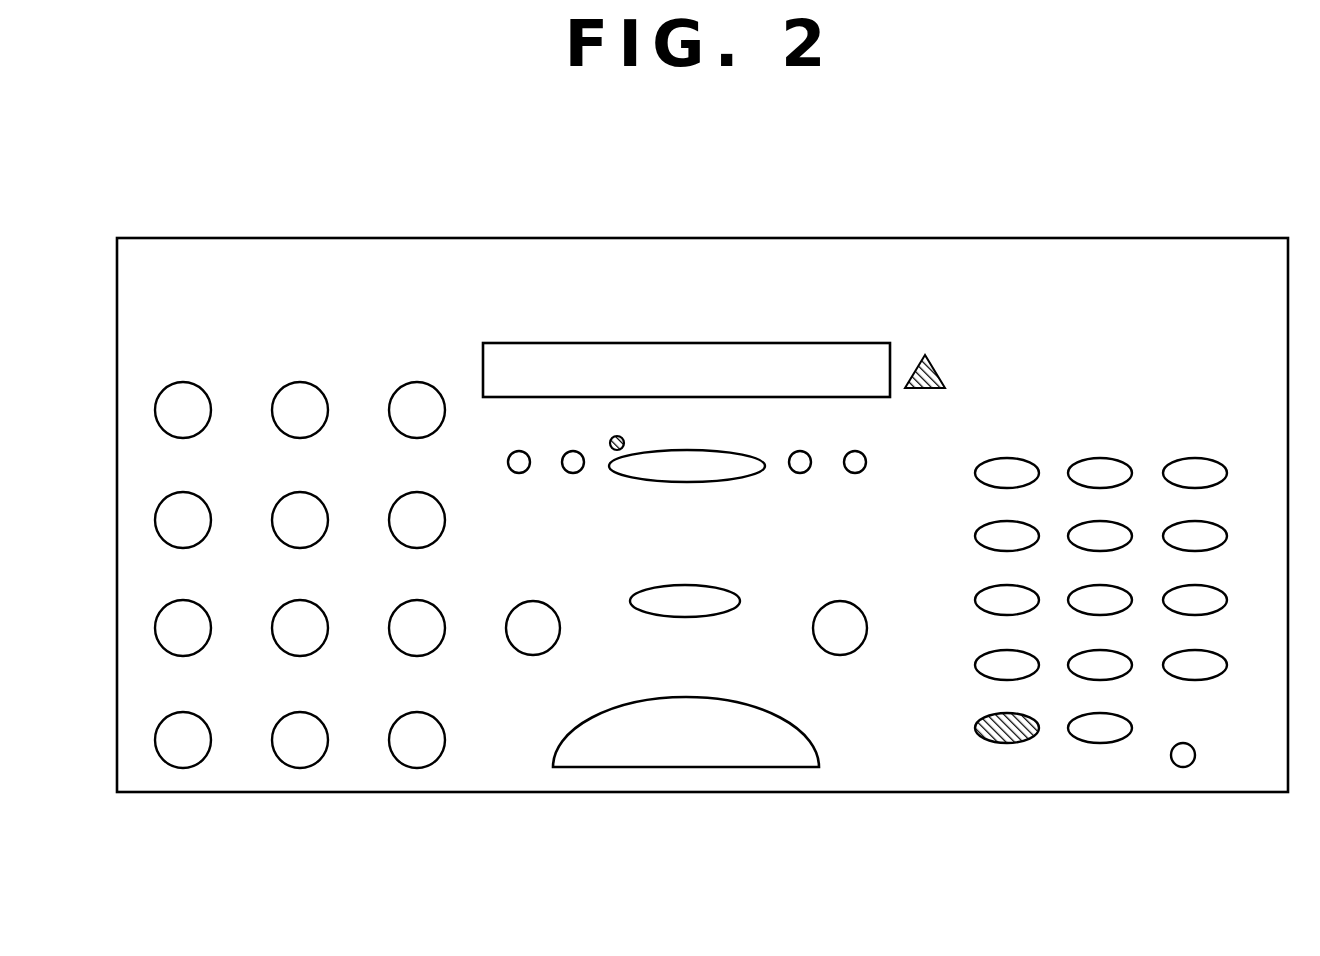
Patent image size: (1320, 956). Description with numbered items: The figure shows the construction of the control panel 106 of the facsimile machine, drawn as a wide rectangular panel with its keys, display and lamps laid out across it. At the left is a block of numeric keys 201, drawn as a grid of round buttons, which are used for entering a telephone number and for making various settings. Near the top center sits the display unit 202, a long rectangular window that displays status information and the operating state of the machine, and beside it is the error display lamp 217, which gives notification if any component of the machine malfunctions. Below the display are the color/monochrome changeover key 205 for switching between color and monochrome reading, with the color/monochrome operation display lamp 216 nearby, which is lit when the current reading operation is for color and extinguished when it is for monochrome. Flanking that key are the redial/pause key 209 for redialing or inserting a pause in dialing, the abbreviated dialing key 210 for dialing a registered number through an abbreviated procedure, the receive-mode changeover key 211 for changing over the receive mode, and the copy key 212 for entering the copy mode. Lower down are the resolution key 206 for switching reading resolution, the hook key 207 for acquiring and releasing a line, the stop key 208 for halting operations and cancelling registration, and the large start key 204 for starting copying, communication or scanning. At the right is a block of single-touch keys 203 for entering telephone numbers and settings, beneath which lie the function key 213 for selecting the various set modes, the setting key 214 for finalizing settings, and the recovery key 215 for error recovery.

The control panel 106 is at (790, 197).
The numeric keys 201 is at (450, 372).
The display unit 202 is at (687, 343).
The single-touch keys 203 is at (1235, 447).
The start key 204 is at (688, 770).
The color/monochrome changeover key 205 is at (687, 483).
The resolution key 206 is at (687, 618).
The hook key 207 is at (531, 656).
The stop key 208 is at (840, 656).
The redial/pause key 209 is at (519, 474).
The abbreviated dialing key 210 is at (573, 474).
The receive-mode changeover key 211 is at (800, 474).
The copy key 212 is at (855, 474).
The function key 213 is at (1009, 744).
The setting key 214 is at (1102, 744).
The recovery key 215 is at (1183, 768).
The color/monochrome operation display lamp 216 is at (611, 437).
The error display lamp 217 is at (925, 352).